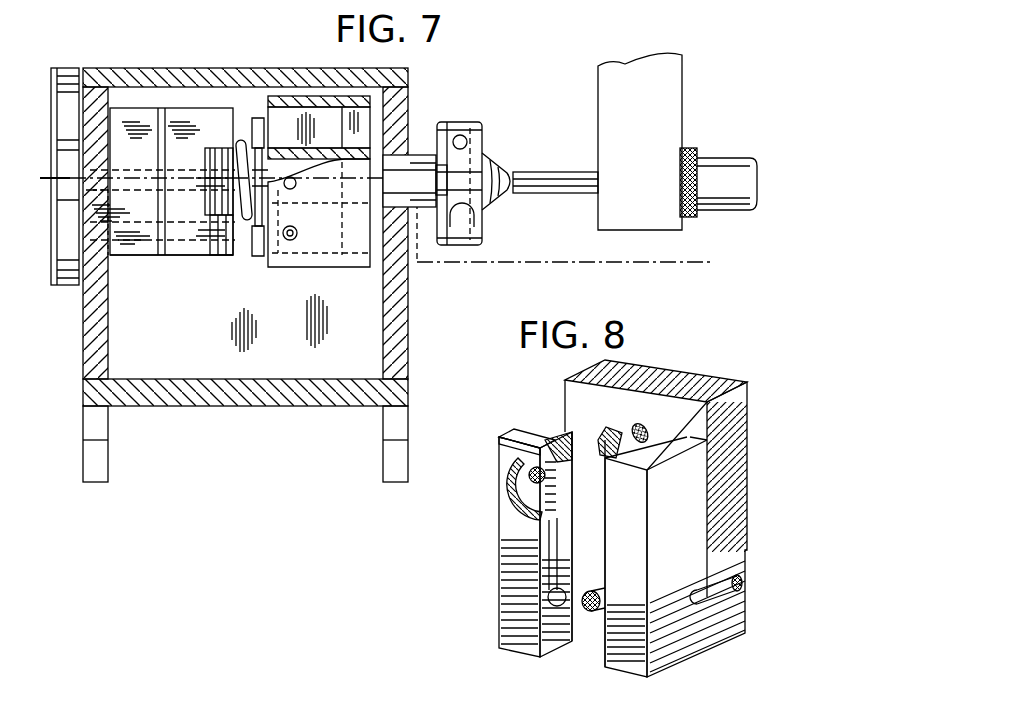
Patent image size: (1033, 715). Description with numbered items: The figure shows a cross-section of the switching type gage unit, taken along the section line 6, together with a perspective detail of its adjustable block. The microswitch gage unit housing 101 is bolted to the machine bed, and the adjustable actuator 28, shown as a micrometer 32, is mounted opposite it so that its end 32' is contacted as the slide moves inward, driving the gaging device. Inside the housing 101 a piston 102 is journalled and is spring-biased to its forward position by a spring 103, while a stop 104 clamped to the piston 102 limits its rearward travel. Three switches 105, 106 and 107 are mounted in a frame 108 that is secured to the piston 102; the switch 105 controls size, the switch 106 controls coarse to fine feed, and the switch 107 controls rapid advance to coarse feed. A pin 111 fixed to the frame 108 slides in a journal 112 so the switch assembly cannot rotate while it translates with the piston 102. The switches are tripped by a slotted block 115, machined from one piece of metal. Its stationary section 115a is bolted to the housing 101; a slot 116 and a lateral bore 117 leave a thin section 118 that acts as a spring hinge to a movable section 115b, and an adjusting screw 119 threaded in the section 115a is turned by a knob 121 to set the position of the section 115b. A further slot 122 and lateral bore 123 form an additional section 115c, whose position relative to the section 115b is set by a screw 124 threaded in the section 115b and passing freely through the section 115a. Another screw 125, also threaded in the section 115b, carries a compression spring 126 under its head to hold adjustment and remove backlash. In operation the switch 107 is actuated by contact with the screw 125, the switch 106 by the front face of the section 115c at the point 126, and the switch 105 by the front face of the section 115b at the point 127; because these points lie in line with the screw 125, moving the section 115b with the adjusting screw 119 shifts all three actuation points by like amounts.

In FIG. 7, the section line 6 is at (44, 184).
In FIG. 7, the adjustable actuator 28 is at (648, 252).
In FIG. 7, the micrometer 32 is at (727, 197).
In FIG. 7, the micrometer end 32' is at (555, 164).
In FIG. 7, the microswitch gage unit housing 101 is at (404, 330).
In FIG. 7, the piston 102 is at (418, 153).
In FIG. 7, the spring 103 is at (238, 142).
In FIG. 7, the stop 104 is at (445, 122).
In FIG. 7, the size control switch 105 is at (272, 112).
In FIG. 7, the coarse-to-fine feed control switch 106 is at (305, 262).
In FIG. 7, the rapid-advance-to-coarse feed control switch 107 is at (268, 260).
In FIG. 7, the frame 108 is at (340, 258).
In FIG. 7, the pin 111 is at (444, 183).
In FIG. 7, the journal 112 is at (444, 172).
In FIG. 7, the slotted block 115 is at (128, 260).
In FIG. 8, the slotted block 115 is at (534, 402).
In FIG. 7, the stationary section 115a is at (118, 118).
In FIG. 8, the stationary section 115a is at (745, 463).
In FIG. 7, the adjustable section 115b is at (182, 118).
In FIG. 8, the adjustable section 115b is at (690, 537).
In FIG. 7, the additional section 115c is at (222, 257).
In FIG. 8, the additional section 115c is at (502, 504).
In FIG. 8, the slot 116 is at (707, 440).
In FIG. 8, the lateral bore 117 is at (733, 597).
In FIG. 8, the thin section 118 is at (742, 583).
In FIG. 7, the adjusting screw 119 is at (155, 186).
In FIG. 8, the adjusting screw 119 is at (638, 424).
In FIG. 7, the knob 121 is at (72, 285).
In FIG. 8, the slot 122 is at (520, 432).
In FIG. 8, the lateral bore 123 is at (548, 595).
In FIG. 7, the screw 124 is at (184, 248).
In FIG. 8, the screw 124 is at (530, 469).
In FIG. 7, the screw 125 is at (205, 196).
In FIG. 8, the screw 125 is at (587, 612).
In FIG. 8, the compression spring / actuation point 126 is at (518, 590).
In FIG. 8, the actuation point 127 is at (627, 610).